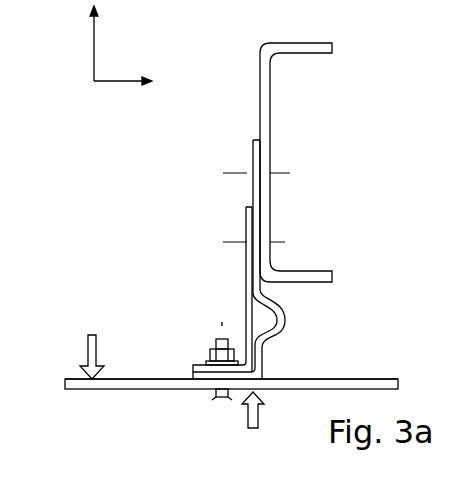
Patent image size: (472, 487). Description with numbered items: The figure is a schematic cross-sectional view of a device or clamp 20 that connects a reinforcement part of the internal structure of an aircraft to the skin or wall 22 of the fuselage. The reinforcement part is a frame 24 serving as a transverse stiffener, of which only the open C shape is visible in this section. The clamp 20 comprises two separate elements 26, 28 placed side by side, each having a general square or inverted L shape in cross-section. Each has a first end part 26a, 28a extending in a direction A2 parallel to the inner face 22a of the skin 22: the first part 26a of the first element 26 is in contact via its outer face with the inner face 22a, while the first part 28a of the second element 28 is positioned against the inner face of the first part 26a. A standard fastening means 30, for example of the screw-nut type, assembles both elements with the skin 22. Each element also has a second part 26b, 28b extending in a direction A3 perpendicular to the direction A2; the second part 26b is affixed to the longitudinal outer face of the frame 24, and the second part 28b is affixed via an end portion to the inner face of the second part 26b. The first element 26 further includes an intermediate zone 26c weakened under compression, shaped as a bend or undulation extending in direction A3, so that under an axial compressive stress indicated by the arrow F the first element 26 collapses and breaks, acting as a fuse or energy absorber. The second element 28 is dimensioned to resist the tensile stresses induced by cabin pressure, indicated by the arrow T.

The clamp 20 is at (250, 221).
The wall 22 is at (295, 380).
The inner face 22a is at (128, 379).
The frame 24 is at (288, 47).
The first element 26 is at (253, 198).
The first end part 26a is at (236, 392).
The second part 26b is at (253, 155).
The zone weakened under compression 26c is at (285, 322).
The second element 28 is at (248, 318).
The first end part 28a is at (197, 364).
The second part 28b is at (247, 233).
The fastening means 30 is at (196, 332).
The direction A2 is at (118, 85).
The direction A3 is at (93, 50).
The arrow T is at (88, 345).
The arrow F is at (260, 418).